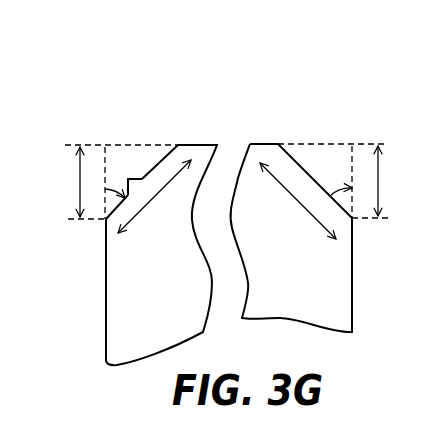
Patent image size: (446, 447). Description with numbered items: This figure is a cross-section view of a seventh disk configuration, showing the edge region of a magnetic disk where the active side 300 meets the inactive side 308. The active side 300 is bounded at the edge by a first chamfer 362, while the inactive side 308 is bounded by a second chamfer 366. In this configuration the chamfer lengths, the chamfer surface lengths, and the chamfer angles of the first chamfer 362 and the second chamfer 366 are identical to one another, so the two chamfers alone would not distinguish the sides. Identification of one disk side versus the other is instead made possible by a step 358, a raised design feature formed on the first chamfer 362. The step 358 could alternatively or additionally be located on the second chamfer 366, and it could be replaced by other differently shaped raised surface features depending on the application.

The active side 300 is at (106, 298).
The inactive side 308 is at (352, 276).
The step 358 is at (144, 179).
The first chamfer 362 is at (103, 123).
The second chamfer 366 is at (355, 120).